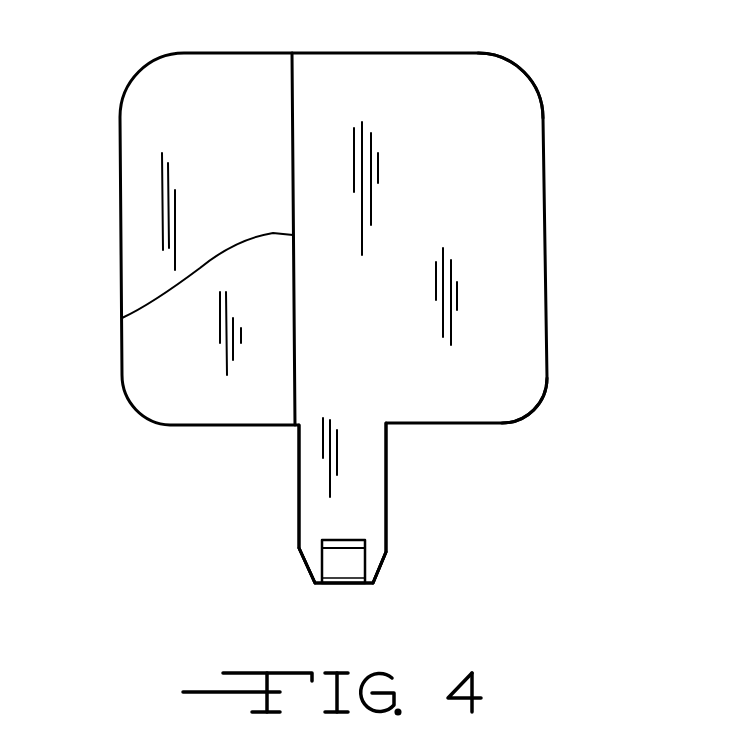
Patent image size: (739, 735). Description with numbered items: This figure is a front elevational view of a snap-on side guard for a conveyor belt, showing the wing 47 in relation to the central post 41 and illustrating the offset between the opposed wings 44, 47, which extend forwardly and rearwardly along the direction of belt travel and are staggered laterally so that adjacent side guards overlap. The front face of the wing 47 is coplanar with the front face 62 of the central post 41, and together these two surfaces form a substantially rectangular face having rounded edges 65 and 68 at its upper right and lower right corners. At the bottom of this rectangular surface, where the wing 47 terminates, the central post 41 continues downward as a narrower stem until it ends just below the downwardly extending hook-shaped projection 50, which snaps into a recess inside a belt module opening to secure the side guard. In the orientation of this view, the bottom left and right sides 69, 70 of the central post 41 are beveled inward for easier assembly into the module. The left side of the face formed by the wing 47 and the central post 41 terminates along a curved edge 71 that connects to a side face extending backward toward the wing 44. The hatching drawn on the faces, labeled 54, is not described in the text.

The central post 41 is at (355, 505).
The wing 44 is at (152, 102).
The wing 47 is at (477, 75).
The hook-shaped projection 50 is at (342, 565).
The panel surface 54 is at (458, 198).
The front face 62 is at (373, 457).
The rounded edge 65 is at (520, 72).
The rounded edge 68 is at (538, 402).
The bottom left side 69 is at (305, 563).
The bottom right side 70 is at (386, 553).
The curved edge 71 is at (122, 320).